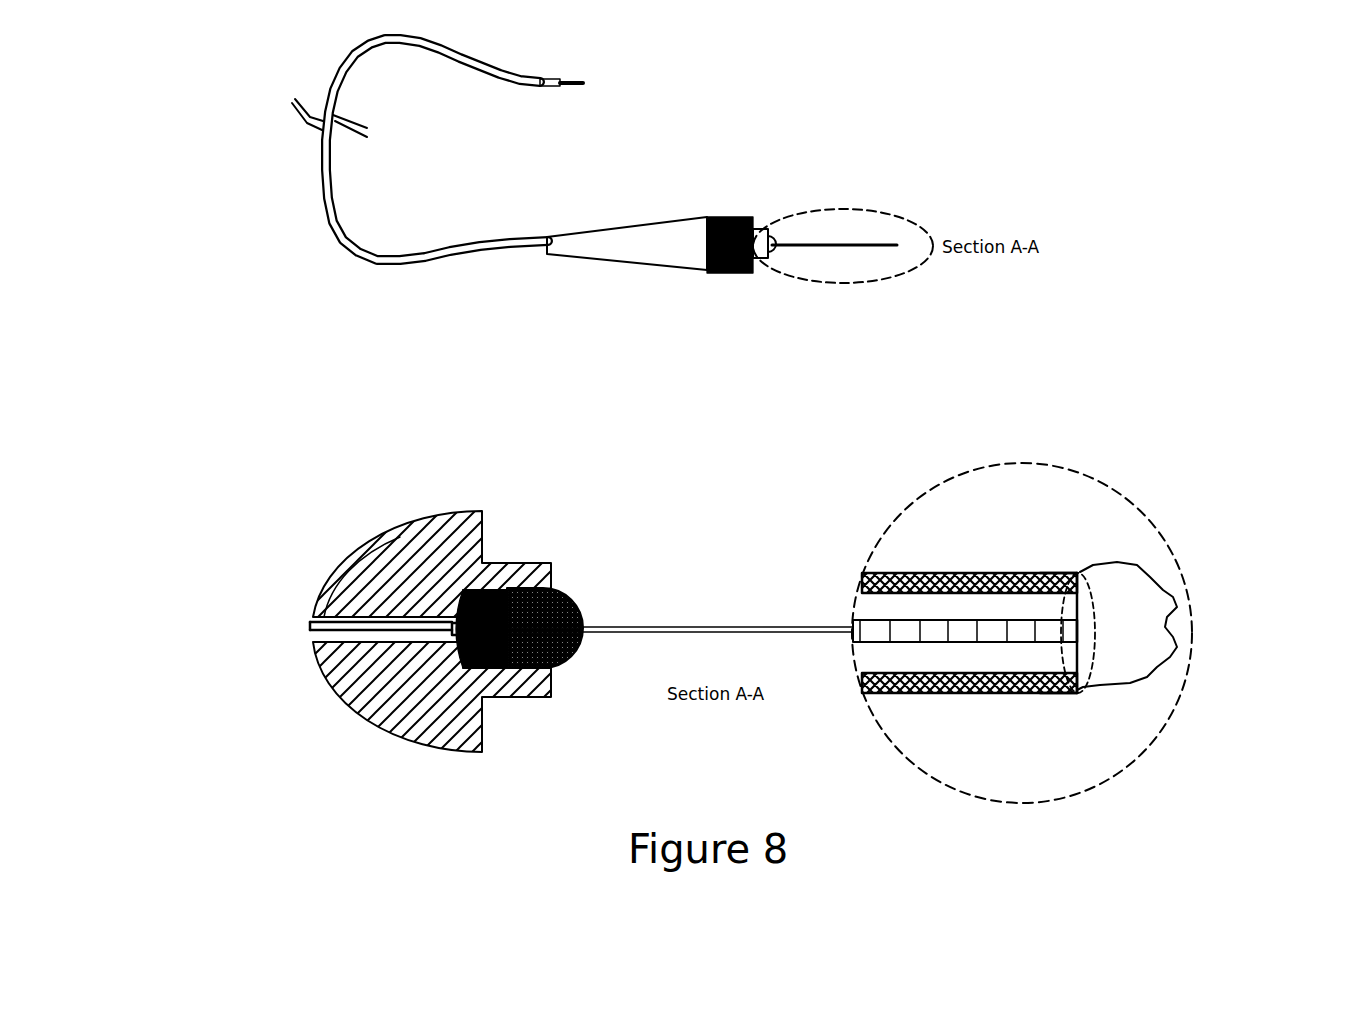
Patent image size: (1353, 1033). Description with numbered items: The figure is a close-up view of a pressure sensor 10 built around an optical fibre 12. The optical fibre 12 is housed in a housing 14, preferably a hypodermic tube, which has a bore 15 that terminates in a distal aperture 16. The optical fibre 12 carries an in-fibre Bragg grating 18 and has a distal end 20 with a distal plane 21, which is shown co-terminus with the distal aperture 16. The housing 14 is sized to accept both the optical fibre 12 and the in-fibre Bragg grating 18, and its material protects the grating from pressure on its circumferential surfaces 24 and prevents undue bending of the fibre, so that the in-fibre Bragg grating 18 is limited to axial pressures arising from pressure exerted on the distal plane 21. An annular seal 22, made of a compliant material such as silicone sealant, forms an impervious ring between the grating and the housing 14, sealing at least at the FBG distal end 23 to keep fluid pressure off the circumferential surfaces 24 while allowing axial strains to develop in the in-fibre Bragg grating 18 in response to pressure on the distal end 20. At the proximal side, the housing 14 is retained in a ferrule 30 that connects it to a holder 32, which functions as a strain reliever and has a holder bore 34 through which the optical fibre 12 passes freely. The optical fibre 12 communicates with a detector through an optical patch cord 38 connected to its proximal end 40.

The pressure sensor 10 is at (899, 188).
The optical fibre 12 is at (578, 541).
The housing 14 is at (950, 508).
The bore 15 is at (1177, 588).
The distal aperture 16 is at (1172, 721).
The in-fibre Bragg grating 18 is at (946, 699).
The distal end 20 is at (1212, 654).
The distal plane 21 is at (1118, 486).
The annular seal 22 is at (1099, 622).
The FBG distal end 23 is at (961, 738).
The circumferential surfaces 24 is at (949, 750).
The ferrule 30 is at (400, 679).
The holder 32 is at (639, 387).
The holder bore 34 is at (296, 674).
The optical patch cord 38 is at (332, 205).
The proximal end 40 is at (171, 561).